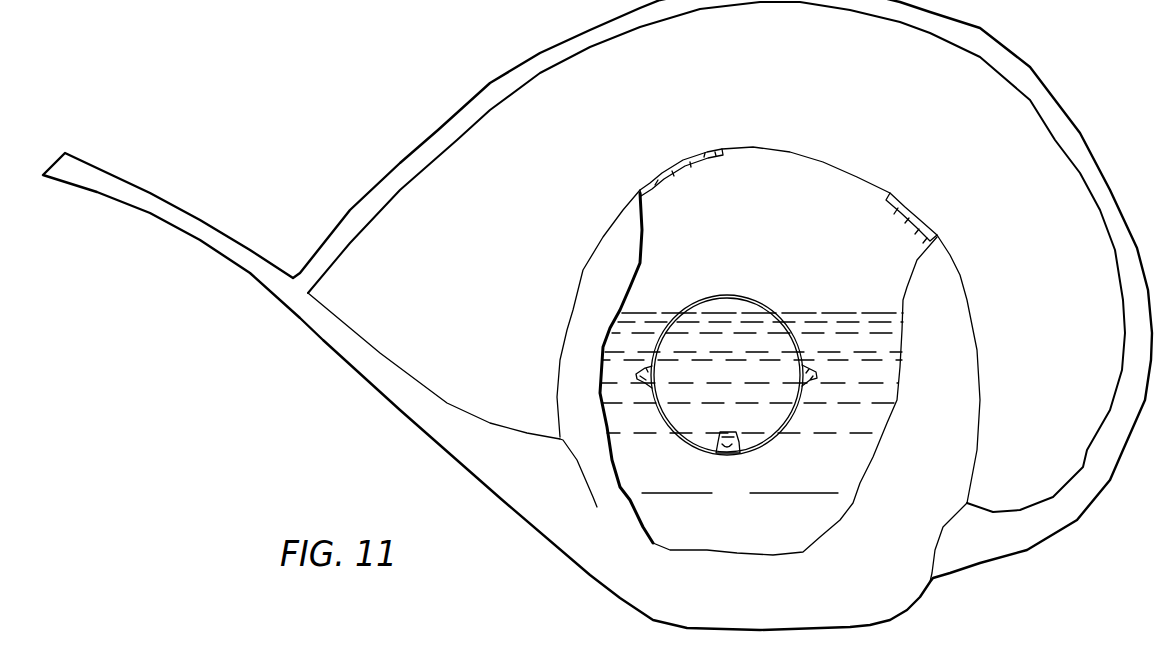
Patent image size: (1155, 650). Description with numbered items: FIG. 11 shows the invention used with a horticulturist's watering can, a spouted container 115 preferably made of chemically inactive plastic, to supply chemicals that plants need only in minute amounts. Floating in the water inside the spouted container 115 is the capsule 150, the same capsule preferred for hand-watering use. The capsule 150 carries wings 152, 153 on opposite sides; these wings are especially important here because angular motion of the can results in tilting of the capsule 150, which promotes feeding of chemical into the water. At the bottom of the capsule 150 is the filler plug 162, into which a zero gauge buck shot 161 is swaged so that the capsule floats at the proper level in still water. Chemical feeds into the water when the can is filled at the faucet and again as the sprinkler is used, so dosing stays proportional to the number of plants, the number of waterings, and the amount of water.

The spouted container 115 is at (965, 277).
The capsule 150 is at (740, 300).
The wing 152 is at (637, 380).
The wing 153 is at (813, 377).
The zero gauge buck shot 161 is at (726, 455).
The filler plug 162 is at (728, 432).